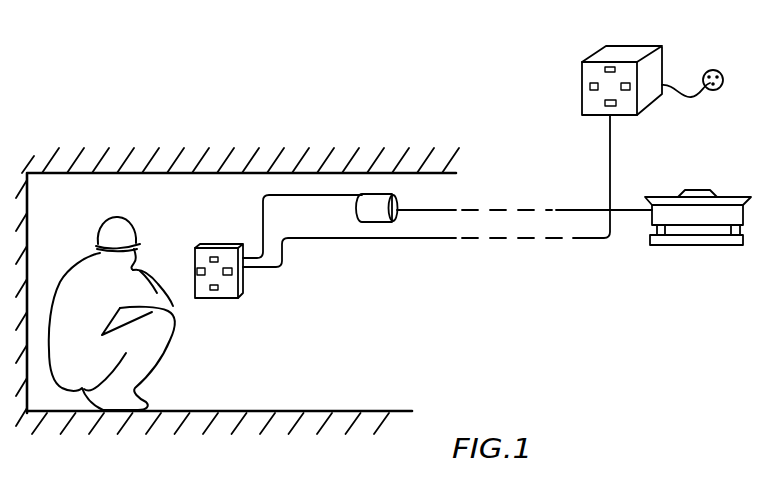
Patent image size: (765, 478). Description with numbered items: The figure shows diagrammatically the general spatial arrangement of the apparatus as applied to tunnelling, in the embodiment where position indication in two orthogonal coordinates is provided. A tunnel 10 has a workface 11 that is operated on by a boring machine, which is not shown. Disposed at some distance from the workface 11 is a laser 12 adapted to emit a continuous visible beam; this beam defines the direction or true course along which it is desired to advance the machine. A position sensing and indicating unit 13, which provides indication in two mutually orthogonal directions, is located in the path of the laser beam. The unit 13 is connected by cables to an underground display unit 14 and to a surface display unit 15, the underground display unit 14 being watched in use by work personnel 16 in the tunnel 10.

The tunnel 10 is at (306, 412).
The workface 11 is at (32, 250).
The laser 12 is at (714, 208).
The position sensing and indicating unit 13 is at (390, 201).
The underground display unit 14 is at (217, 250).
The surface display unit 15 is at (579, 63).
The work personnel 16 is at (112, 313).